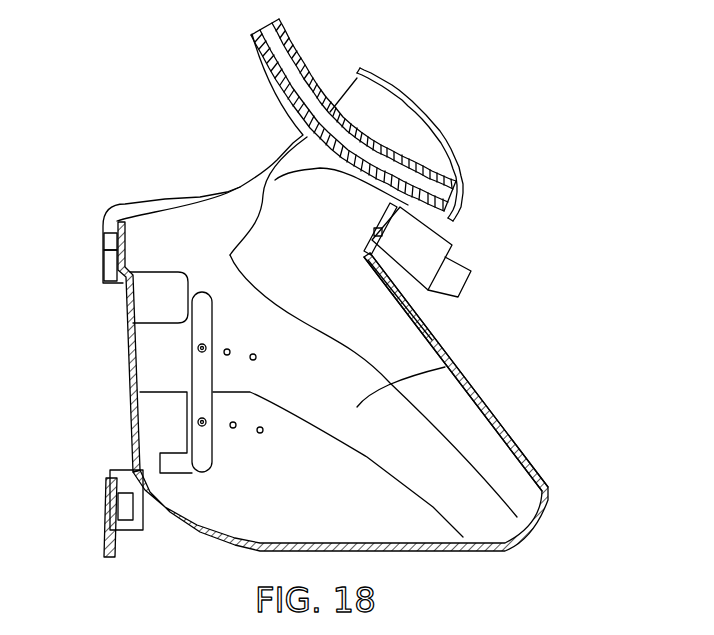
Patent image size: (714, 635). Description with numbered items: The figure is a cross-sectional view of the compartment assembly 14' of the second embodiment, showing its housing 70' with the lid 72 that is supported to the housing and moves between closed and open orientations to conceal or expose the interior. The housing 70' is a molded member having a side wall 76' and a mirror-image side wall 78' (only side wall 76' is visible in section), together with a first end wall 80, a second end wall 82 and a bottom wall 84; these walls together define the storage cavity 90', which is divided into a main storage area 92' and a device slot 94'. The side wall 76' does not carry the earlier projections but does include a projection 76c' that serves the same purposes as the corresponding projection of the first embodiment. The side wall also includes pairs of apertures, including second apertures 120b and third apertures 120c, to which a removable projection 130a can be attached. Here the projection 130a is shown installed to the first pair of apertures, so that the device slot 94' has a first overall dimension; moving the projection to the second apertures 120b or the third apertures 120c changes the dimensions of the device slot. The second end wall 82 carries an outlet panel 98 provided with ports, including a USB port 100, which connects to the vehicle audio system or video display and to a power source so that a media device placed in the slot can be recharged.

The compartment assembly 14' is at (98, 67).
The lid 72 is at (304, 63).
The housing 70' is at (256, 144).
The side wall 76' is at (178, 205).
The side wall 78' is at (178, 205).
The storage cavity 90' is at (257, 196).
The USB port 100 is at (426, 250).
The outlet panel 98 is at (368, 256).
The projection 76c' is at (122, 297).
The device slot 94' is at (138, 402).
The removable projection 130a is at (198, 372).
The first end wall 80 is at (135, 420).
The second apertures 120b is at (234, 422).
The third apertures 120c is at (263, 432).
The bottom wall 84 is at (345, 541).
The main storage area 92' is at (365, 352).
The second end wall 82 is at (490, 408).